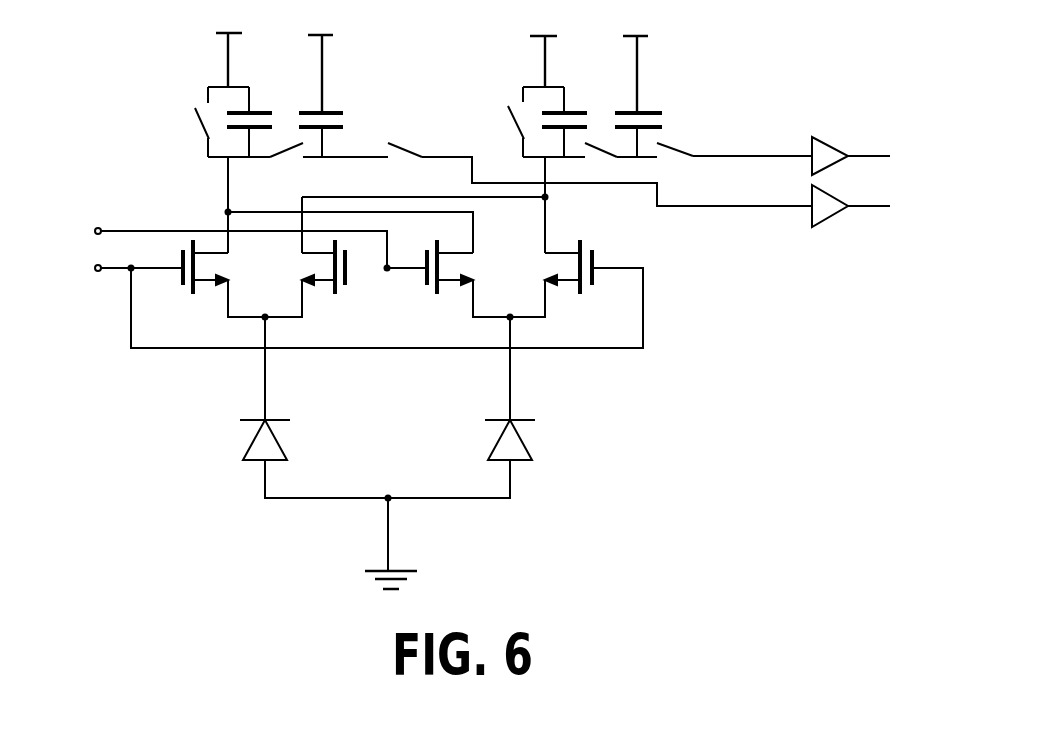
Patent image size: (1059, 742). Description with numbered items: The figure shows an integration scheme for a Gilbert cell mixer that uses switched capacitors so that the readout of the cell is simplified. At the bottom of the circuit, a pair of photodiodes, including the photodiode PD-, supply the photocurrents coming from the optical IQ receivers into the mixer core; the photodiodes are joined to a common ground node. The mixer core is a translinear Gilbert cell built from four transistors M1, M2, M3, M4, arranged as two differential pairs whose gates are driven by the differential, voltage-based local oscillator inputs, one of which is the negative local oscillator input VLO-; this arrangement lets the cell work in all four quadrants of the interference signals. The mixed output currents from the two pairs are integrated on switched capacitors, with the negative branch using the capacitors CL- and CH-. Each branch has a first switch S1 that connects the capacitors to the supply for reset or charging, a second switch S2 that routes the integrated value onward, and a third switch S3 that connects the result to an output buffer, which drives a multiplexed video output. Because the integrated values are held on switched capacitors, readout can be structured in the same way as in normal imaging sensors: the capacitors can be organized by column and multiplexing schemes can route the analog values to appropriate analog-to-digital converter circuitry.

The switch S1 is at (340, 122).
The switch S2 is at (443, 169).
The switch S3 is at (548, 171).
The switched capacitor CL- is at (578, 118).
The switched capacitor CH- is at (652, 118).
The transistor M1 is at (197, 286).
The transistor M2 is at (330, 286).
The transistor M3 is at (442, 285).
The transistor M4 is at (575, 286).
The photodiode PD- is at (541, 440).
The negative local oscillator input VLO- is at (66, 223).